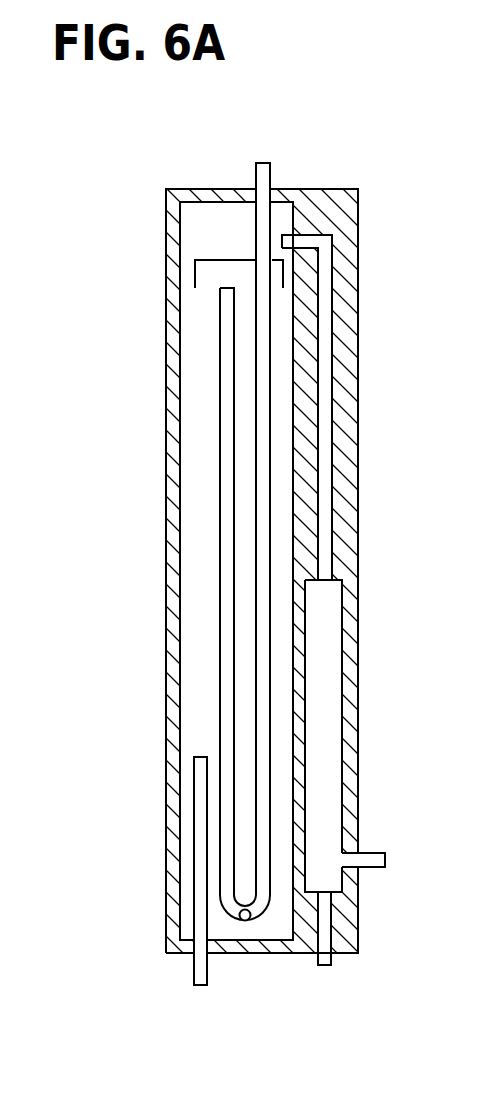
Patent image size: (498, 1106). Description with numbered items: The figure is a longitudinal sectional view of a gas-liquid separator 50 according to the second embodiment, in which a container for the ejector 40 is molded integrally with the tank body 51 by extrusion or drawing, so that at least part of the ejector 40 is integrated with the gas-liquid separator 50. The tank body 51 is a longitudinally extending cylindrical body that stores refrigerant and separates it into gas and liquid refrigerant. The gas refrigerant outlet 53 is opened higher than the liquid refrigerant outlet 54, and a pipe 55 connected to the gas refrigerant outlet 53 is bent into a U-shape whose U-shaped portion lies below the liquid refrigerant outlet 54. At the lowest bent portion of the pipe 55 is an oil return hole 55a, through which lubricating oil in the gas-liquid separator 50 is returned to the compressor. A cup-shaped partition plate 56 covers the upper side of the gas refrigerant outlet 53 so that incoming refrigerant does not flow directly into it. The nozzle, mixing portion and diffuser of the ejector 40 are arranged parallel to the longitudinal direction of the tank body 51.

The ejector 40 is at (345, 663).
The gas-liquid separator 50 is at (162, 258).
The tank body 51 is at (167, 455).
The gas refrigerant outlet 53 is at (223, 287).
The liquid refrigerant outlet 54 is at (195, 755).
The pipe 55 is at (230, 502).
The oil return hole 55a is at (246, 921).
The partition plate 56 is at (232, 260).